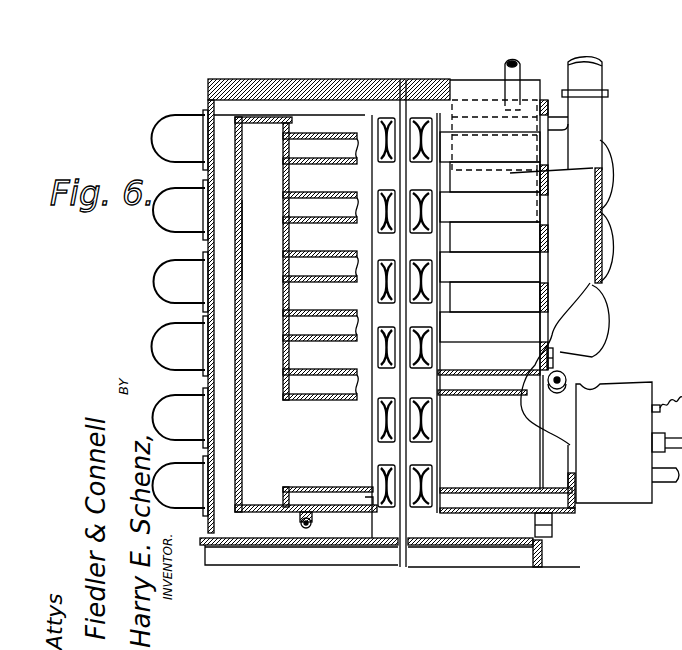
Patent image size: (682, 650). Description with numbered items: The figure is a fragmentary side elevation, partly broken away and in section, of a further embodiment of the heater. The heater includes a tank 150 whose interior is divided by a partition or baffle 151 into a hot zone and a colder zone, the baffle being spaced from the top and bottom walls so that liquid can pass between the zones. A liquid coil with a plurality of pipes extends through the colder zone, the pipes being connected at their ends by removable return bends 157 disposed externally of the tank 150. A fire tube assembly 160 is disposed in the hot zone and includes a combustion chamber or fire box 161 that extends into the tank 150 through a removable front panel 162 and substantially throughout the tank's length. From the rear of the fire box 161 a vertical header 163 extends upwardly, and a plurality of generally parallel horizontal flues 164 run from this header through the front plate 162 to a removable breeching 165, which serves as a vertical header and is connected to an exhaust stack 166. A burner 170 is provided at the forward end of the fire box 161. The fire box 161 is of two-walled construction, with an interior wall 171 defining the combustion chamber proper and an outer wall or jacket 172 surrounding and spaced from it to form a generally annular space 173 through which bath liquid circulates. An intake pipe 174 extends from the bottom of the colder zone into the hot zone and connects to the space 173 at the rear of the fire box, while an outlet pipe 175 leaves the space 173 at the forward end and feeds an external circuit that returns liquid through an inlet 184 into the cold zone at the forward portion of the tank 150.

The tank 150 is at (338, 548).
The partition or baffle 151 is at (510, 173).
The removable return bends 157 is at (166, 282).
The fire tube assembly 160 is at (238, 301).
The combustion chamber or fire box 161 is at (504, 463).
The removable front panel 162 is at (556, 361).
The vertical header 163 is at (246, 240).
The horizontal flues 164 is at (313, 340).
The removable breeching 165 is at (602, 190).
The exhaust stack 166 is at (590, 78).
The burner 170 is at (633, 476).
The interior wall 171 is at (468, 494).
The outer wall or jacket 172 is at (508, 517).
The annular space 173 is at (357, 503).
The intake pipe 174 is at (305, 530).
The outlet pipe 175 is at (575, 374).
The inlet 184 is at (516, 76).